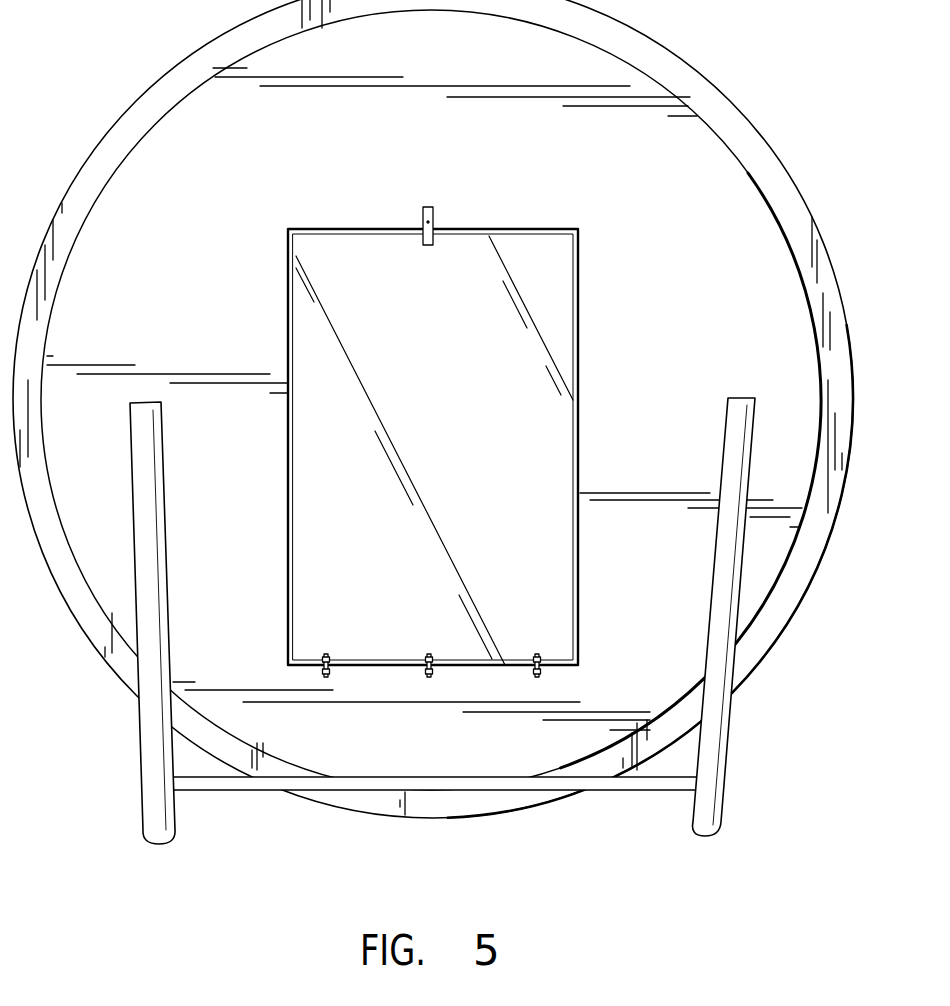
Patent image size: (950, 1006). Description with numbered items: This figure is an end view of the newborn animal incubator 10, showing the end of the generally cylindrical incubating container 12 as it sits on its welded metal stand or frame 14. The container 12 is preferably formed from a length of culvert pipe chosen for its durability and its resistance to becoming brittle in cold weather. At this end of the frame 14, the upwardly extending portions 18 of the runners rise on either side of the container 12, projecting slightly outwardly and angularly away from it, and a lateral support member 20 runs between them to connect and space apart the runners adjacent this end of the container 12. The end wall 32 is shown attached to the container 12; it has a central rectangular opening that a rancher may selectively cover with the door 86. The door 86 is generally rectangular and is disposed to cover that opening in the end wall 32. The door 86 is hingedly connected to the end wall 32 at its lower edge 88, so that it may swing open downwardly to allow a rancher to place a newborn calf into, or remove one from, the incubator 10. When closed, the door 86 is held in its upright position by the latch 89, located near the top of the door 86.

The newborn animal incubator 10 is at (738, 97).
The incubating container 12 is at (812, 216).
The frame 14 is at (440, 629).
The upwardly extending portion 18 is at (143, 738).
The lateral support member 20 is at (593, 792).
The end wall 32 is at (745, 183).
The door 86 is at (572, 308).
The lower edge 88 is at (369, 654).
The latch 89 is at (433, 210).